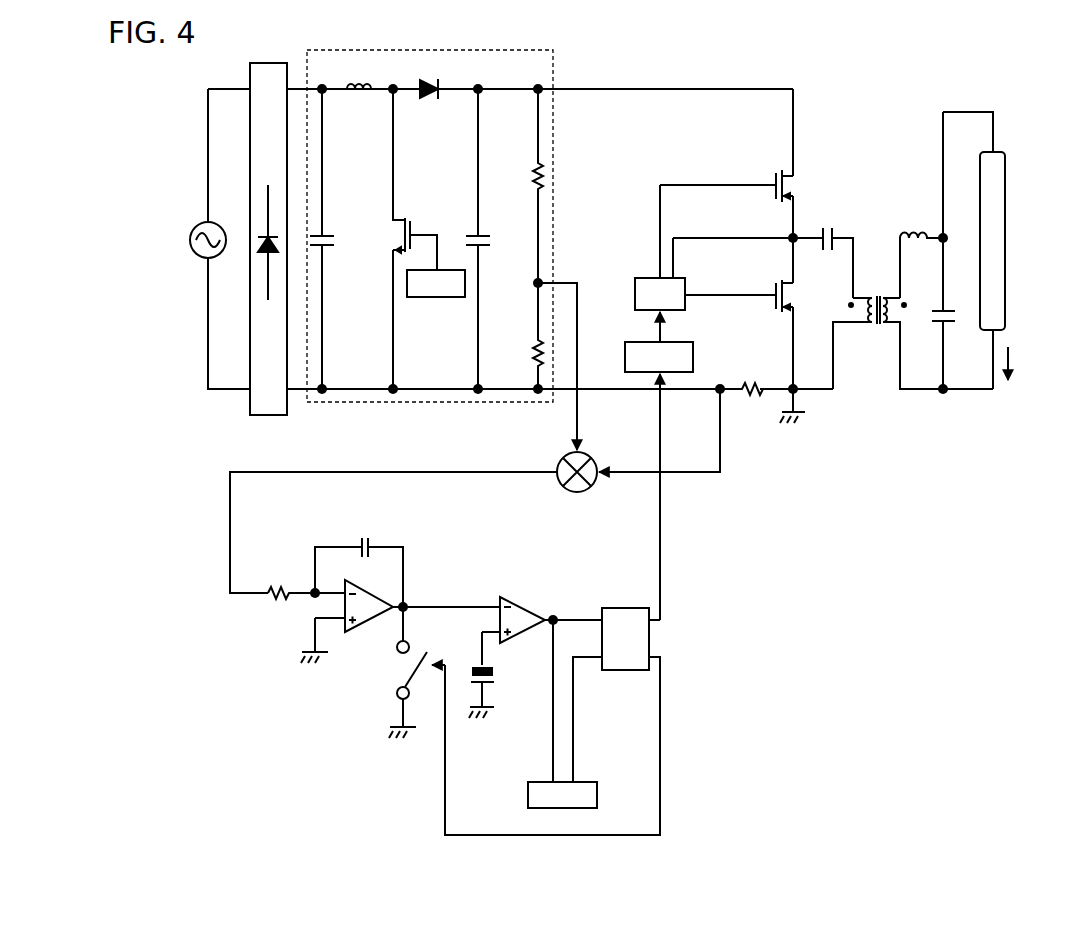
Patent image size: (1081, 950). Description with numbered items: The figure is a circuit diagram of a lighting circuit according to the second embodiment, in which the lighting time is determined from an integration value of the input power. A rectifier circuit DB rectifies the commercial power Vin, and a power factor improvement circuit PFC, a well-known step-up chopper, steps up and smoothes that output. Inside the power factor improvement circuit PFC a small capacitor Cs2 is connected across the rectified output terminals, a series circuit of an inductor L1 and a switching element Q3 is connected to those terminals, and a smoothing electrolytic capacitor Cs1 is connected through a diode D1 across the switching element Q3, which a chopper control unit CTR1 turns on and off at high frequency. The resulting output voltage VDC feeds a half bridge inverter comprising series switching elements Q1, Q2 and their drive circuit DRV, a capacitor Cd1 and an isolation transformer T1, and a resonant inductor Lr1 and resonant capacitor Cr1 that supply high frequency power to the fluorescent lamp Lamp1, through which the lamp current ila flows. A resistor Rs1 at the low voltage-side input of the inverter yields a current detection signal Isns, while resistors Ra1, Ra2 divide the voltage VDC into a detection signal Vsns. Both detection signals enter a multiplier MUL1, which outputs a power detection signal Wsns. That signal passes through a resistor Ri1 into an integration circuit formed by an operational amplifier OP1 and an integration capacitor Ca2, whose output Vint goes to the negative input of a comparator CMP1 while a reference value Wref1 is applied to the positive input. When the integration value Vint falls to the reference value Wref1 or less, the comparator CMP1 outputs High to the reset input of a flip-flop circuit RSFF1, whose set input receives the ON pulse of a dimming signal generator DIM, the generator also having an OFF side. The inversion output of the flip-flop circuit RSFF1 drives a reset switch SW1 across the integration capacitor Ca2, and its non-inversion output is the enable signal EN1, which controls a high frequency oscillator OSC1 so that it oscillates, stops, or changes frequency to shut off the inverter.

The commercial power Vin is at (190, 240).
The rectifier circuit DB is at (268, 229).
The power factor improvement circuit PFC is at (430, 215).
The inductor L1 is at (359, 75).
The diode D1 is at (431, 79).
The capacitor Cs2 is at (334, 239).
The switching element Q3 is at (402, 239).
The chopper control unit CTR1 is at (436, 283).
The electrolytic capacitor Cs1 is at (490, 239).
The resistor Ra1 is at (520, 186).
The resistor Ra2 is at (520, 336).
The output voltage VDC is at (539, 86).
The divided voltage signal Vsns is at (568, 356).
The switching element Q1 is at (726, 179).
The switching element Q2 is at (739, 290).
The drive circuit DRV is at (660, 294).
The high frequency oscillator OSC1 is at (659, 342).
The enable signal EN1 is at (638, 497).
The resistor Rs1 is at (756, 379).
The capacitor Cd1 is at (832, 249).
The isolation transformer T1 is at (913, 332).
The resonant inductor Lr1 is at (921, 253).
The resonant capacitor Cr1 is at (933, 250).
The fluorescent lamp Lamp1 is at (1004, 250).
The lamp current ila is at (1023, 363).
The detection signal of the input current Isns is at (679, 431).
The multiplier MUL1 is at (576, 488).
The power detection signal Wsns is at (393, 523).
The resistor Ri1 is at (289, 606).
The integration capacitor Ca2 is at (359, 561).
The operational amplifier OP1 is at (400, 618).
The output of the integration circuit Vint is at (411, 592).
The reset switch SW1 is at (400, 672).
The comparator CMP1 is at (548, 610).
The reference value Wref1 is at (506, 675).
The flip-flop circuit RSFF1 is at (552, 711).
The dimming signal generator DIM is at (562, 714).
The OFF signal OFF is at (524, 765).
The ON pulse signal ON is at (599, 765).